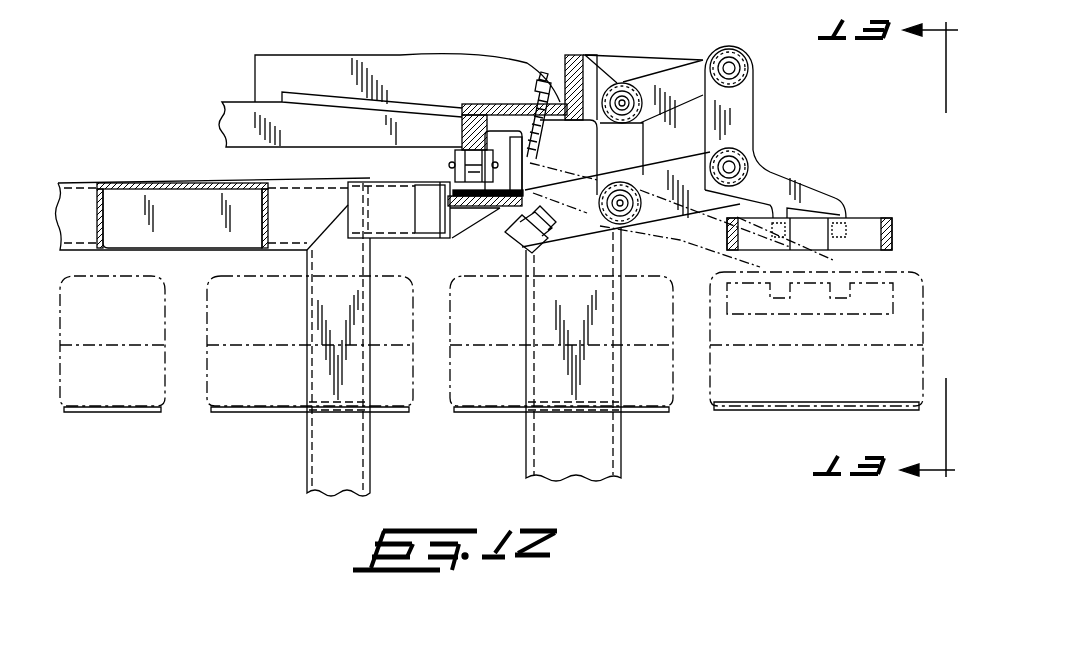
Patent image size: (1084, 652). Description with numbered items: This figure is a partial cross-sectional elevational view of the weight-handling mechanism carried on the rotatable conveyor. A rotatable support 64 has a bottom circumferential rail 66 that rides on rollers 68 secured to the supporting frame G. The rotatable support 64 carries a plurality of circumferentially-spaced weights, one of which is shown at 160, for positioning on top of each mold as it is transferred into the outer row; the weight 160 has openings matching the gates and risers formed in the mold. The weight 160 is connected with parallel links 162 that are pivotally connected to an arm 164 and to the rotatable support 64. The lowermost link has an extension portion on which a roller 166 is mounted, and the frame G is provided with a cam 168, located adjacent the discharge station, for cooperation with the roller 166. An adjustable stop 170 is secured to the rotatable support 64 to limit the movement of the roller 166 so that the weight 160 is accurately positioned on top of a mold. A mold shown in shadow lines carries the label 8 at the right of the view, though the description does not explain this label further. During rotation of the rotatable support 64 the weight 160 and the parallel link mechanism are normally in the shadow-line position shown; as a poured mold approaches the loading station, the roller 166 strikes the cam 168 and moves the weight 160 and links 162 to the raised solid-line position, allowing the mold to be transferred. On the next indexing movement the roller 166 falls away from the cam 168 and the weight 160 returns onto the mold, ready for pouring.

The rotatable support 64 is at (452, 62).
The bottom circumferential rail 66 is at (462, 122).
The rollers 68 is at (458, 150).
The weight 160 is at (895, 228).
The parallel links 162 is at (684, 62).
The arm 164 is at (741, 97).
The roller 166 is at (530, 246).
The cam 168 is at (515, 208).
The adjustable stop 170 is at (540, 86).
The container conveyor 8 is at (921, 300).
The supporting frame G is at (378, 422).